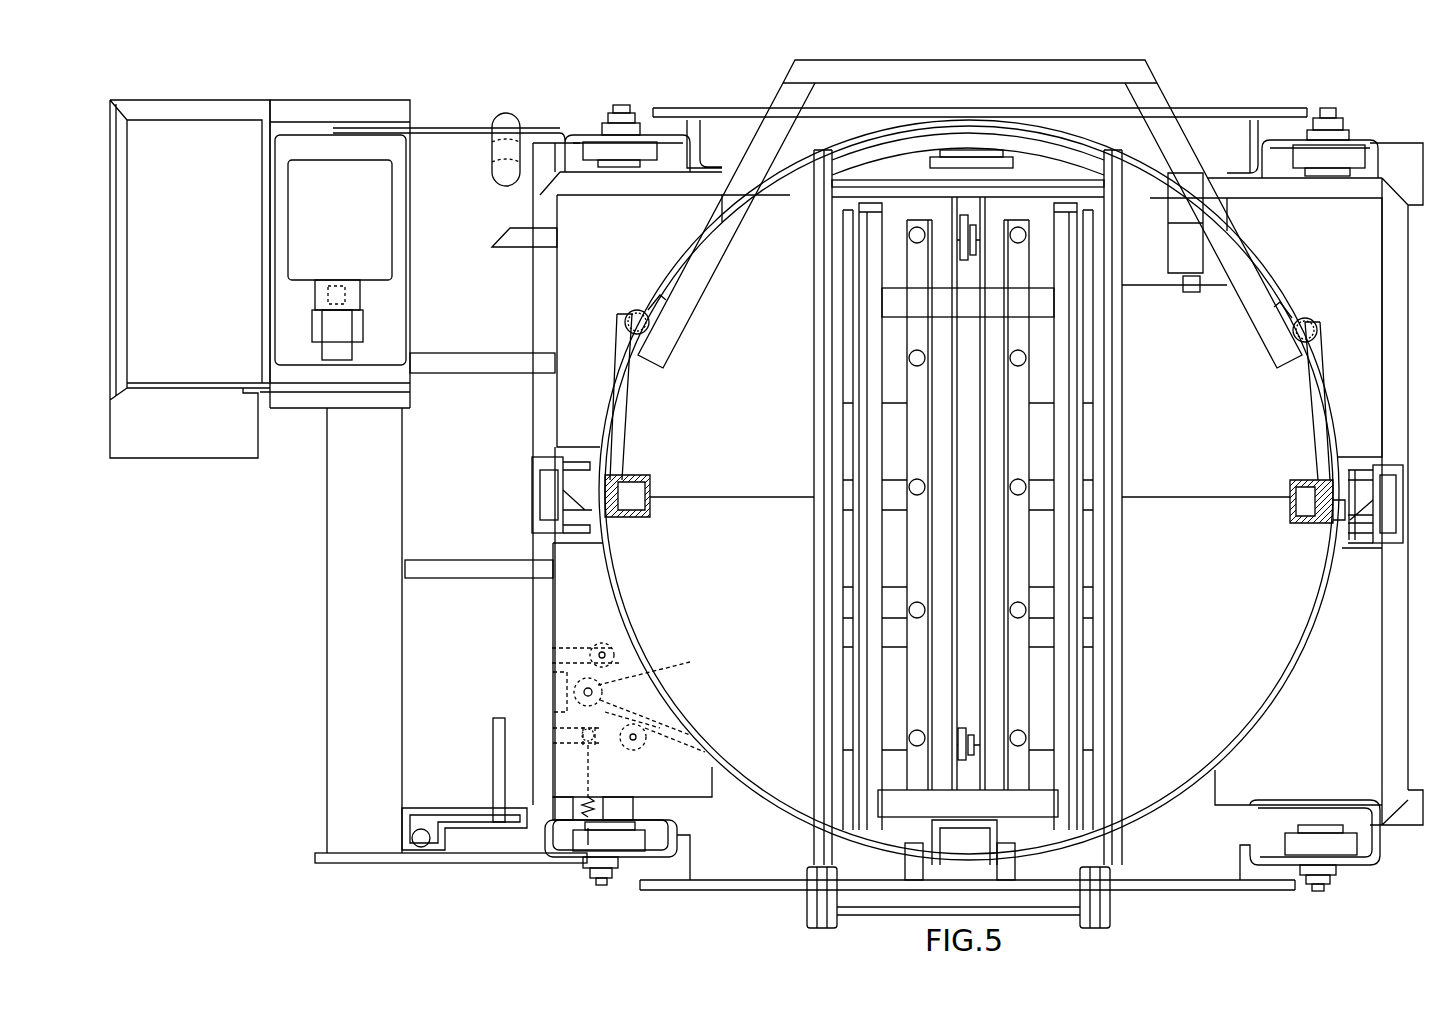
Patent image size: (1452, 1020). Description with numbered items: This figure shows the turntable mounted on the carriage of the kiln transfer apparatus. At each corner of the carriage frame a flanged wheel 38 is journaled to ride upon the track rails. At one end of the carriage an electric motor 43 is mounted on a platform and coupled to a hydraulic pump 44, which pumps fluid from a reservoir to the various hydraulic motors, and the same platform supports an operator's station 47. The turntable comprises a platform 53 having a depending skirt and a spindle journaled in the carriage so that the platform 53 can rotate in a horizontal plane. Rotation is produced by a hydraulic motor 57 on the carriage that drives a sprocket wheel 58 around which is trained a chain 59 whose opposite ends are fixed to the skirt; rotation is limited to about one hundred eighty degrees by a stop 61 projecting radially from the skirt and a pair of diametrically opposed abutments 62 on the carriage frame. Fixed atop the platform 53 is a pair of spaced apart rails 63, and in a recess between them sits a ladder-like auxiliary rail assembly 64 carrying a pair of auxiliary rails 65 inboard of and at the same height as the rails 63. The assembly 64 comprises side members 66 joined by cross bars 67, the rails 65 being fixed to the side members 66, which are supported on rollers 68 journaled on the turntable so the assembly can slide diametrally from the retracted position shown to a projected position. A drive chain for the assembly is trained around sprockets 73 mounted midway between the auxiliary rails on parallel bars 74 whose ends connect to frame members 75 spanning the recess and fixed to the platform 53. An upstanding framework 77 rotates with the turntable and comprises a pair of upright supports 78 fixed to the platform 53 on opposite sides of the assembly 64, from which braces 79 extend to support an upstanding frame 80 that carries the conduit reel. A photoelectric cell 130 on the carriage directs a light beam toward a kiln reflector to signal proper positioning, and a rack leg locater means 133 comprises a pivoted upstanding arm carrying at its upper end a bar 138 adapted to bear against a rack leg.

The flanged wheel 38 is at (655, 152).
The electric motor 43 is at (392, 243).
The hydraulic pump 44 is at (345, 330).
The operator's station 47 is at (207, 290).
The platform 53 is at (1219, 440).
The hydraulic motor 57 is at (630, 676).
The sprocket wheel 58 is at (675, 728).
The chain 59 is at (600, 645).
The stop 61 is at (1335, 515).
The abutments 62 is at (585, 505).
The rails 63 is at (822, 598).
The auxiliary rail assembly 64 is at (1030, 522).
The auxiliary rails 65 is at (862, 545).
The side members 66 is at (848, 645).
The cross bars 67 is at (967, 598).
The rollers 68 is at (1042, 745).
The sprockets 73 is at (970, 248).
The parallel bars 74 is at (948, 335).
The frame members 75 is at (1048, 188).
The upstanding framework 77 is at (970, 209).
The upright supports 78 is at (650, 490).
The braces 79 is at (622, 448).
The upstanding frame 80 is at (1030, 70).
The photoelectric cell 130 is at (492, 150).
The rack leg locater means 133 is at (464, 784).
The bar 138 is at (493, 775).